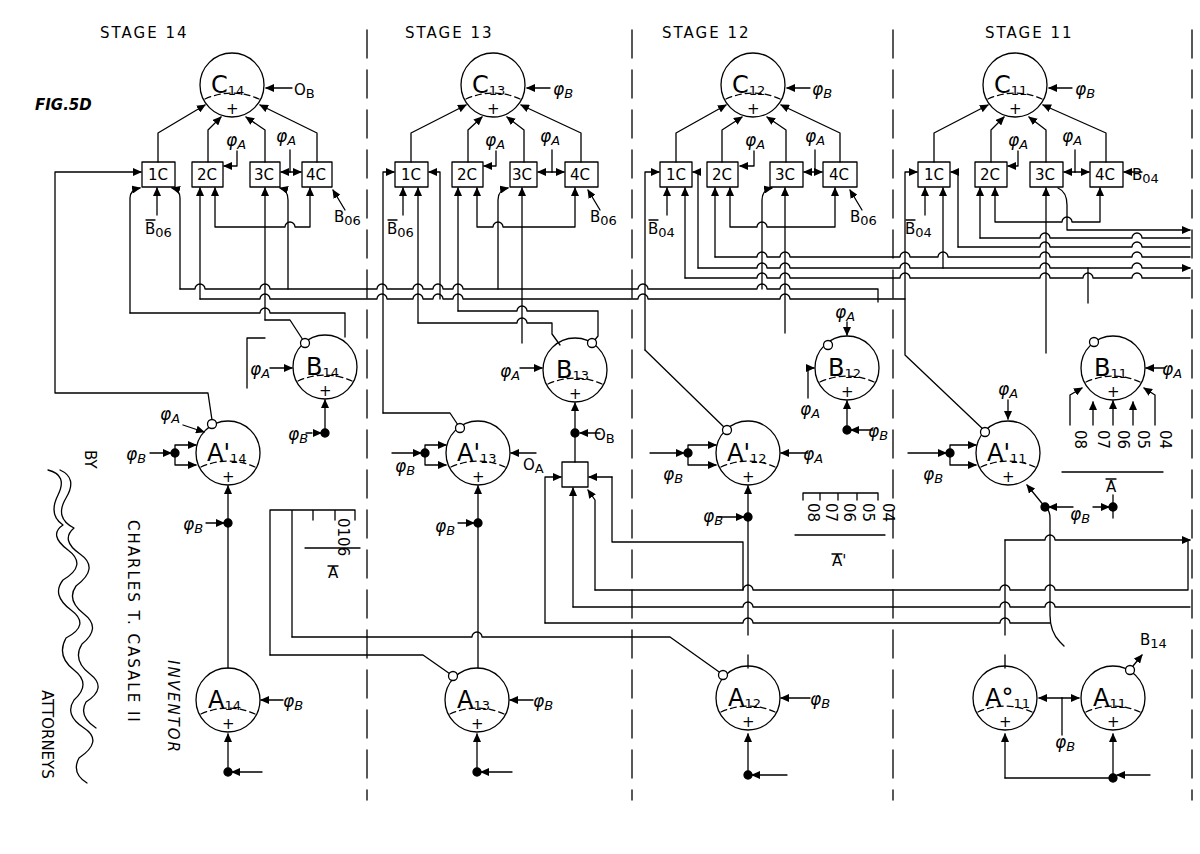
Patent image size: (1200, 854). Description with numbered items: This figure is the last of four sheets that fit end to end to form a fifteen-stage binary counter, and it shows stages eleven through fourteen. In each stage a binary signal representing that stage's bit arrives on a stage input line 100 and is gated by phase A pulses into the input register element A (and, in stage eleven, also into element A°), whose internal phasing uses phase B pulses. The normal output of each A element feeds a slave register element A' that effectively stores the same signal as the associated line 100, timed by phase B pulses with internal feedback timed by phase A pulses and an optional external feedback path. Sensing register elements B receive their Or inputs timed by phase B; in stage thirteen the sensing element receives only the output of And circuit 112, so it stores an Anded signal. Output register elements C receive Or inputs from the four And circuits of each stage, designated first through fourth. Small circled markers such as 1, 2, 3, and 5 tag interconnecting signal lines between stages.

The stage input line 100 is at (228, 772).
The And circuit 112 is at (556, 462).
The signal line 1 is at (1005, 645).
The signal line 2 is at (815, 278).
The signal line 3 is at (243, 421).
The signal line 5 is at (325, 510).